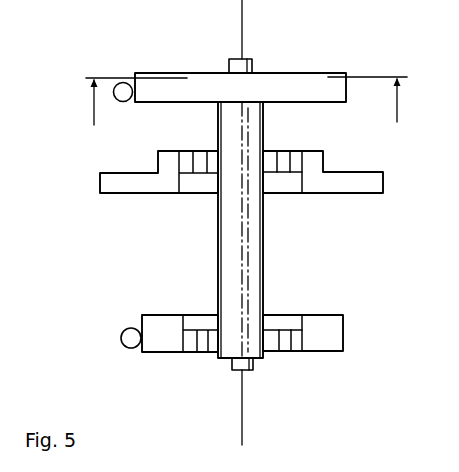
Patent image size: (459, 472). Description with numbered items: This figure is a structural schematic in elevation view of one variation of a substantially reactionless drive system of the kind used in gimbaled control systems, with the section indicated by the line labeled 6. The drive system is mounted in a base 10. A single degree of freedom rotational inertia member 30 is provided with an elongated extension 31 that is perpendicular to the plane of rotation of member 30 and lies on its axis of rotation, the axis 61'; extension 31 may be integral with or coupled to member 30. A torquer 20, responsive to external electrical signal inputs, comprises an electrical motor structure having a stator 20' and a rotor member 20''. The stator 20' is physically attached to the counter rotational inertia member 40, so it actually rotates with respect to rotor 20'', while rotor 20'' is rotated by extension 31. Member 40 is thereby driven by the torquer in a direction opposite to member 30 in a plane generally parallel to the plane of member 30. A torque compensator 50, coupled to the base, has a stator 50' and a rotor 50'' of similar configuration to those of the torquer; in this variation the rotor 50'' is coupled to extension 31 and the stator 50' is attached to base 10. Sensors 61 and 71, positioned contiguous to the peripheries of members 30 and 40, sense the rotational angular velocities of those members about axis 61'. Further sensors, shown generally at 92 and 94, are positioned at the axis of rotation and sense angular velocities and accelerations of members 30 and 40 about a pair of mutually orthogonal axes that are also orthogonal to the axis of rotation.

The axis 61' is at (262, 222).
The section line 6- 6 is at (246, 111).
The single degree of freedom rotational inertia member 30 is at (335, 95).
The sensors 92 is at (254, 64).
The elongated extension 31 is at (221, 241).
The sensor 61 is at (131, 106).
The base 10 is at (167, 186).
The torque compensator 50 is at (323, 153).
The rotor 50'' is at (281, 143).
The stator 50' is at (321, 149).
The sensor 71 is at (121, 338).
The counter rotational inertia member 40 is at (319, 336).
The rotor member 20'' is at (283, 314).
The stator 20' is at (302, 322).
The torquer 20 is at (290, 363).
The sensors 94 is at (236, 362).